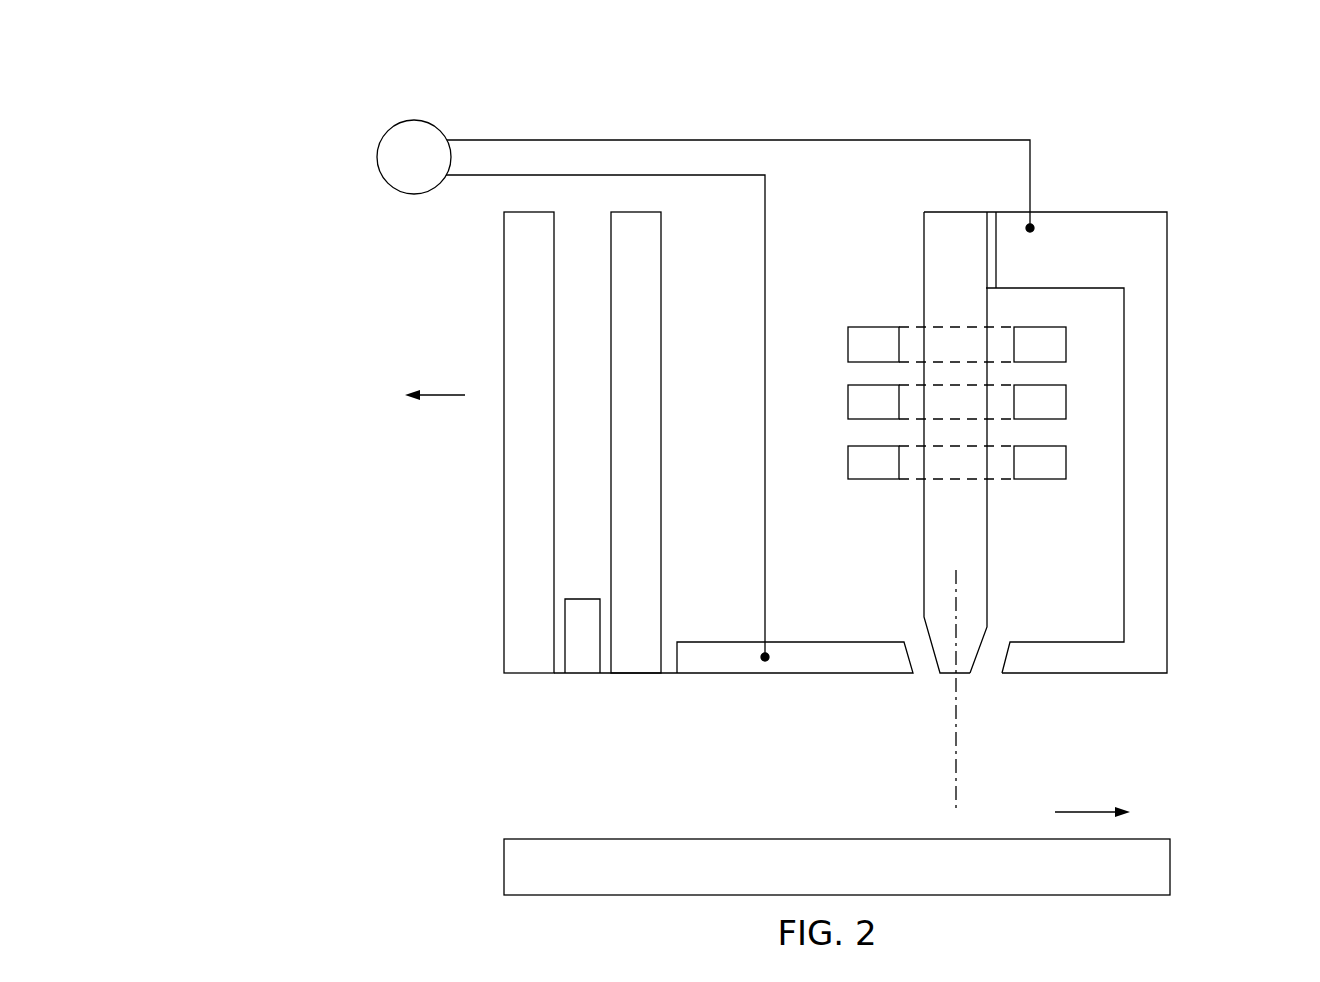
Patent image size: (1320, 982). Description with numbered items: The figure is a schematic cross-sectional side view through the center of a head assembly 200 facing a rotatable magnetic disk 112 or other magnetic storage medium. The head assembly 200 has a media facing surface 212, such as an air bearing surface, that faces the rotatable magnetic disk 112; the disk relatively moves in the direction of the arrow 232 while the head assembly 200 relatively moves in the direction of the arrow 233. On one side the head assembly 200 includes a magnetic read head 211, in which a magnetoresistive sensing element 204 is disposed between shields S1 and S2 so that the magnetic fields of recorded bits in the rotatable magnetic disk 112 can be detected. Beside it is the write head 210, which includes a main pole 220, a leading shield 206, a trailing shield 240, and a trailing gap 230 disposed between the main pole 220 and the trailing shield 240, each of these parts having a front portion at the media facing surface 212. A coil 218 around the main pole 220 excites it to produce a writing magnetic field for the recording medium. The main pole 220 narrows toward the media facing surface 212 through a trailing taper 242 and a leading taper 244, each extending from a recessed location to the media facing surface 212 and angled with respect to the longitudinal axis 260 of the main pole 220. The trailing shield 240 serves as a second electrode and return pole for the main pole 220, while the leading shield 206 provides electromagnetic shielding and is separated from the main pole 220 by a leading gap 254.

The head assembly 200 is at (243, 86).
The magnetic read head 211 is at (665, 112).
The write head 210 is at (1175, 112).
The shield S1 is at (523, 676).
The shield S2 is at (633, 676).
The sensing element 204 is at (578, 676).
The leading shield 206 is at (727, 676).
The trailing shield 240 is at (1145, 658).
The media facing surface 212 is at (1080, 674).
The main pole 220 is at (970, 532).
The coil 218 is at (870, 481).
The leading taper 244 is at (928, 637).
The trailing taper 242 is at (983, 627).
The leading gap 254 is at (927, 665).
The trailing gap 230 is at (991, 660).
The longitudinal axis 260 is at (956, 776).
The arrow 233 is at (450, 392).
The arrow 232 is at (1082, 810).
The rotatable magnetic disk 112 is at (1170, 864).